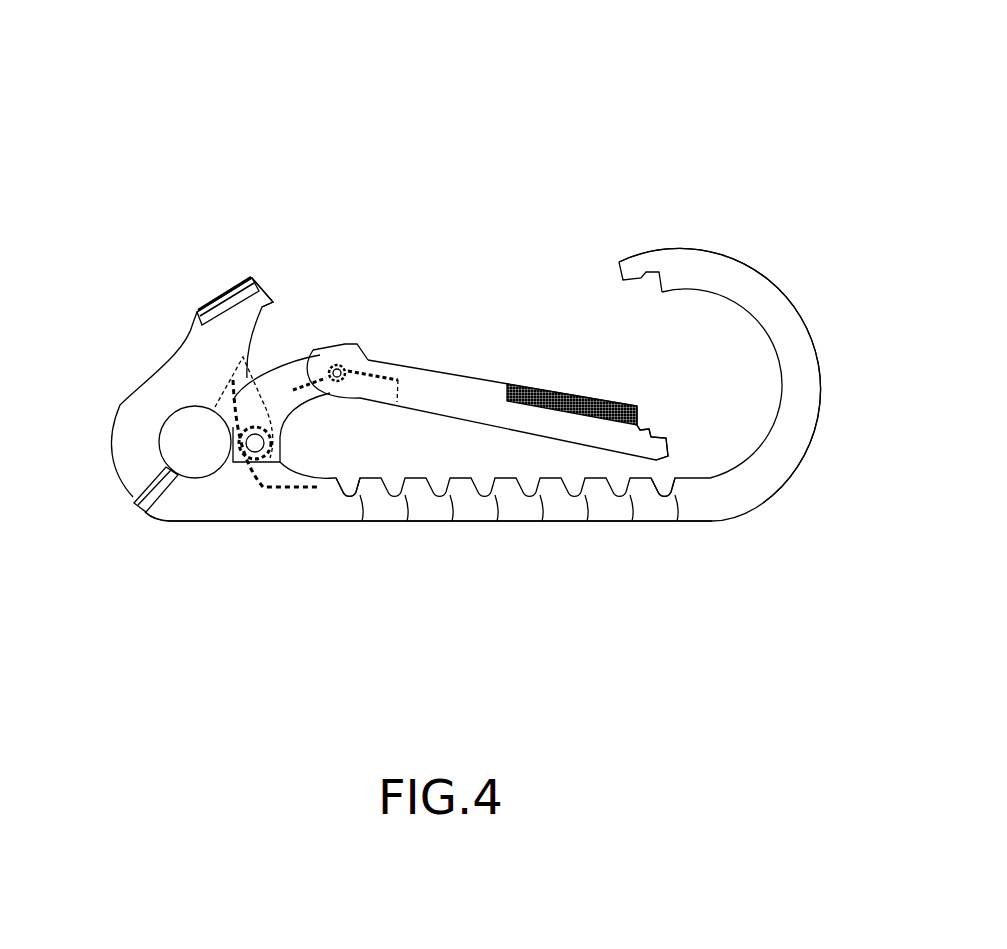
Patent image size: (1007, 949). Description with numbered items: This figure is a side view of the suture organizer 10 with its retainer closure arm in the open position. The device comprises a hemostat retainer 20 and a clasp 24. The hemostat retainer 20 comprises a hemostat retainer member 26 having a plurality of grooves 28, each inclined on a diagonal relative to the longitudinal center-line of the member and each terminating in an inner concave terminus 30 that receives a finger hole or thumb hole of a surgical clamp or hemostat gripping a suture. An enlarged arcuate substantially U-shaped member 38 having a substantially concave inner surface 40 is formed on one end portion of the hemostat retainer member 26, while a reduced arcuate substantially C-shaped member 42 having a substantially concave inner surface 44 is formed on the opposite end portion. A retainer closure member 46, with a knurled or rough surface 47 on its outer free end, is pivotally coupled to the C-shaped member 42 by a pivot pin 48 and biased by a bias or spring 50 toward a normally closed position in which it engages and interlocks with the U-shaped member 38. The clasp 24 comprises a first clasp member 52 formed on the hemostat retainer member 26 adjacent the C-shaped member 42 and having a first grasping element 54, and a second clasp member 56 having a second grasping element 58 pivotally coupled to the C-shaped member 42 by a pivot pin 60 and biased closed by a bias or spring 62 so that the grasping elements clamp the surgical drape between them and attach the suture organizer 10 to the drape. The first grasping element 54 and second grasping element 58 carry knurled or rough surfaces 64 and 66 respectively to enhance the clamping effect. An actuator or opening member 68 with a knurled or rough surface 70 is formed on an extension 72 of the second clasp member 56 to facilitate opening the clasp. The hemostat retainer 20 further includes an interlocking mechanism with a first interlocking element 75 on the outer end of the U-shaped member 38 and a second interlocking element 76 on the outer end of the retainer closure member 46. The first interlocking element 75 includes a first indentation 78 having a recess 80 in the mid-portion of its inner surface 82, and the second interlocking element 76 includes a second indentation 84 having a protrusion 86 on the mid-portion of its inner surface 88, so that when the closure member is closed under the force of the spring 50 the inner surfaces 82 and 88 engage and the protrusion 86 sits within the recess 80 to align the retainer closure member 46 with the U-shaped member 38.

The suture organizer 10 is at (425, 183).
The hemostat retainer 20 is at (733, 208).
The clasp 24 is at (116, 543).
The hemostat retainer member 26 is at (552, 522).
The grooves 28 is at (357, 476).
The inner concave terminus 30 is at (677, 521).
The enlarged arcuate substantially U-shaped member 38 is at (787, 290).
The concave inner surface 40 is at (777, 358).
The reduced arcuate substantially C-shaped member 42 is at (263, 378).
The concave inner surface 44 is at (282, 455).
The retainer closure member 46 is at (443, 372).
The knurled or rough surface 47 is at (532, 388).
The pivot pin 48 is at (340, 370).
The bias or spring 50 is at (377, 372).
The first clasp member 52 is at (192, 528).
The first grasping element 54 is at (157, 513).
The second clasp member 56 is at (110, 440).
The second grasping element 58 is at (133, 492).
The pivot pin 60 is at (257, 450).
The bias or spring 62 is at (227, 380).
The knurled or rough surface 64 is at (177, 477).
The knurled or rough surface 66 is at (128, 490).
The actuator or opening member 68 is at (265, 277).
The knurled or rough surface 70 is at (207, 300).
The extension 72 is at (260, 302).
The first interlocking element 75 is at (680, 363).
The second interlocking element 76 is at (640, 257).
The first indentation 78 is at (646, 422).
The recess 80 is at (659, 428).
The inner surface 82 is at (667, 425).
The second indentation 84 is at (657, 285).
The protrusion 86 is at (630, 303).
The inner surface 88 is at (637, 280).